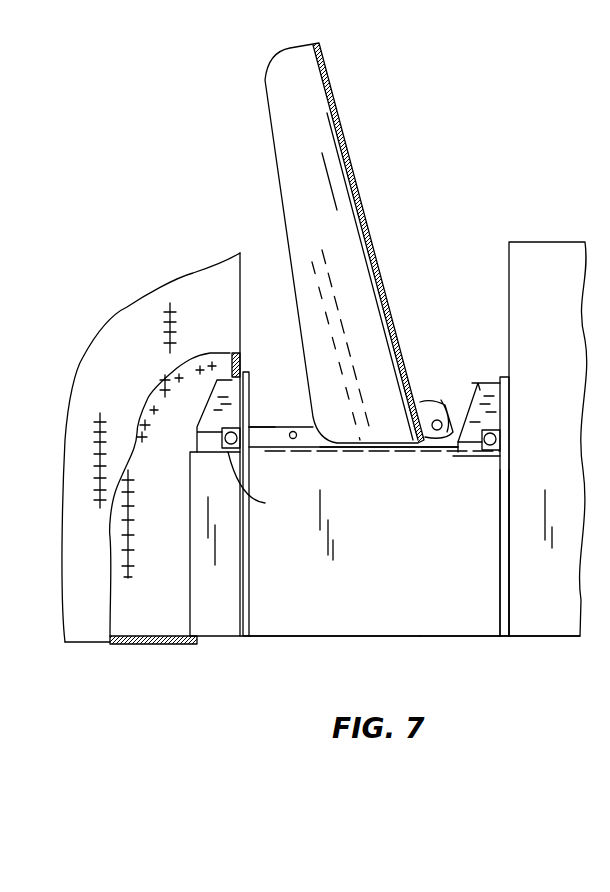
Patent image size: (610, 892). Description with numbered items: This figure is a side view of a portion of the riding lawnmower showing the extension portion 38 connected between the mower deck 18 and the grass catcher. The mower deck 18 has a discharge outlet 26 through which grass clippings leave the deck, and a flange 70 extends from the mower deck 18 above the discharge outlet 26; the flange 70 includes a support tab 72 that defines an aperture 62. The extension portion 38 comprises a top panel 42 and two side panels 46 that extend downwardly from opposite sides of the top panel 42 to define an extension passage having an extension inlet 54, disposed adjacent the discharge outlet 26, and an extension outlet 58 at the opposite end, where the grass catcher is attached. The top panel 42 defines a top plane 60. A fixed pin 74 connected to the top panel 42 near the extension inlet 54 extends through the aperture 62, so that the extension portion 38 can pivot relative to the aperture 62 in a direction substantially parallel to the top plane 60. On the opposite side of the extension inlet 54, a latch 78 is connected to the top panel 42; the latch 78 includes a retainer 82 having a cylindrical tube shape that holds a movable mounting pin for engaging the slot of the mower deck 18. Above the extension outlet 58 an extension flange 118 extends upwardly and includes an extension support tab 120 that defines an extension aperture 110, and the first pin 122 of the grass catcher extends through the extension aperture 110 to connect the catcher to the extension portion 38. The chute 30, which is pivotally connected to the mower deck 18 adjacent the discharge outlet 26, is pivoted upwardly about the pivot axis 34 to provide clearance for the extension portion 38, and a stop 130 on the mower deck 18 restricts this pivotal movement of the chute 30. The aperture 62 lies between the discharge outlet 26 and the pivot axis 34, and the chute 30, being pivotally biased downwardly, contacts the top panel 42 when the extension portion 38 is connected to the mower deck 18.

The mower deck 18 is at (537, 640).
The discharge outlet 26 is at (500, 588).
The chute 30 is at (353, 165).
The pivot axis 34 is at (438, 418).
The extension portion 38 is at (325, 638).
The top panel 42 is at (330, 449).
The side panels 46 is at (410, 637).
The extension inlet 54 is at (503, 568).
The extension outlet 58 is at (240, 588).
The top plane 60 is at (287, 448).
The aperture 62 is at (498, 438).
The flange 70 is at (511, 402).
The support tab 72 is at (478, 382).
The fixed pin 74 is at (488, 452).
The latch 78 is at (293, 424).
The retainer 82 is at (272, 427).
The extension aperture 110 is at (265, 504).
The extension flange 118 is at (245, 376).
The extension support tab 120 is at (207, 403).
The first pin 122 is at (222, 437).
The stop 130 is at (537, 241).